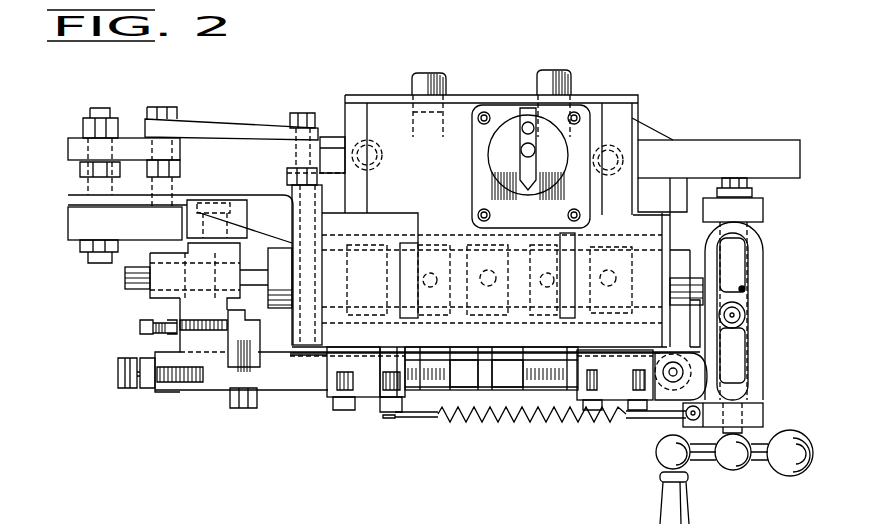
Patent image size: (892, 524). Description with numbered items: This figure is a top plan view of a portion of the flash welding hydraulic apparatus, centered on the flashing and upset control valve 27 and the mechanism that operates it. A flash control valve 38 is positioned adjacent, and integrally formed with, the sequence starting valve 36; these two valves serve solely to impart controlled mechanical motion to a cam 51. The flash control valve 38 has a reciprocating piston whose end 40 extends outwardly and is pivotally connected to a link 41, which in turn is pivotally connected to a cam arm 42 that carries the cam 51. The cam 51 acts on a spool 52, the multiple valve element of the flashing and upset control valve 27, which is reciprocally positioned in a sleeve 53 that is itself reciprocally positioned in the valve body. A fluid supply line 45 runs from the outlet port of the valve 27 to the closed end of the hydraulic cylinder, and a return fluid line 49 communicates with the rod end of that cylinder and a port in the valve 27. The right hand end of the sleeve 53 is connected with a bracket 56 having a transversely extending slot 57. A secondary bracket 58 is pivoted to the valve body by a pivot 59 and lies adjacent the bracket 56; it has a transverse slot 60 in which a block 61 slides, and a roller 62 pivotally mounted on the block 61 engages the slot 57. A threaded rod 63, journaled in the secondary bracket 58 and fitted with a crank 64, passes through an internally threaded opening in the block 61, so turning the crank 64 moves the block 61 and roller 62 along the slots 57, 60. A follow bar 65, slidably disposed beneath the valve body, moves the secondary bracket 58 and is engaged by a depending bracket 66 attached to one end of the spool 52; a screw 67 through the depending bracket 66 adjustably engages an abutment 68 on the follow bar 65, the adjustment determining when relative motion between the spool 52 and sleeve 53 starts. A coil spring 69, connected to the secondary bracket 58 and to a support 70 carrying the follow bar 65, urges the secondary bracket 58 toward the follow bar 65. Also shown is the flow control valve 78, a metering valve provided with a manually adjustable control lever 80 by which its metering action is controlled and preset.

The flashing and upset control valve 27 is at (705, 192).
The sequence starting valve 36 is at (453, 276).
The flash control valve 38 is at (437, 178).
The end of piston 40 is at (328, 138).
The link 41 is at (240, 128).
The cam arm 42 is at (128, 140).
The fluid supply line 45 is at (562, 82).
The return fluid line 49 is at (427, 82).
The cam 51 is at (95, 225).
The spool 52 is at (140, 278).
The sleeve 53 is at (688, 323).
The bracket 56 is at (752, 280).
The transversely extending slot 57 is at (746, 290).
The secondary bracket 58 is at (757, 228).
The pivot 59 is at (757, 208).
The transverse slot 60 is at (740, 268).
The block 61 is at (738, 340).
The roller 62 is at (746, 306).
The threaded rod 63 is at (745, 430).
The crank 64 is at (681, 494).
The follow bar 65 is at (280, 386).
The depending bracket 66 is at (203, 383).
The screw 67 is at (140, 326).
The abutment 68 is at (252, 340).
The coil spring 69 is at (490, 415).
The support 70 is at (117, 516).
The flow control valve 78 is at (478, 146).
The control lever 80 is at (526, 147).